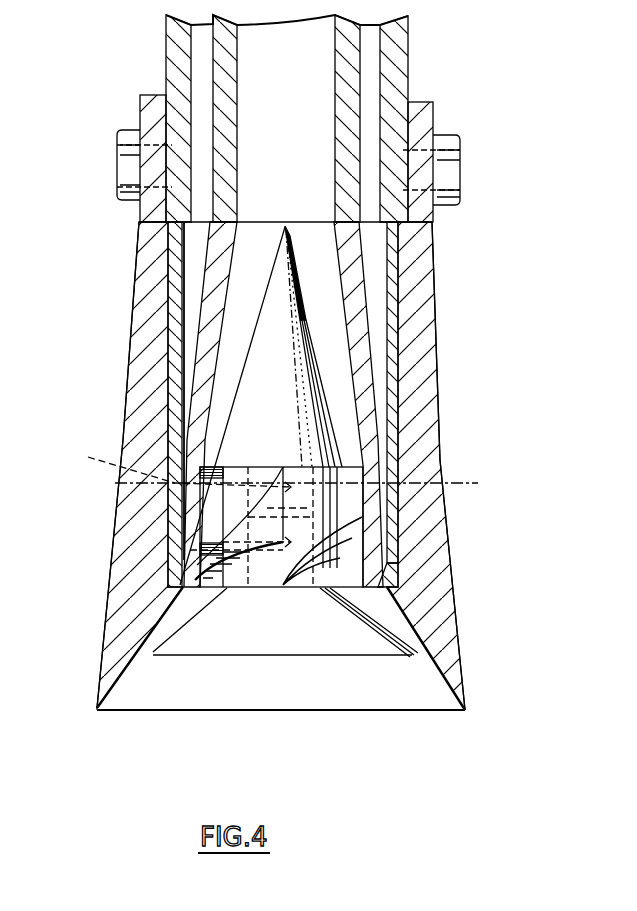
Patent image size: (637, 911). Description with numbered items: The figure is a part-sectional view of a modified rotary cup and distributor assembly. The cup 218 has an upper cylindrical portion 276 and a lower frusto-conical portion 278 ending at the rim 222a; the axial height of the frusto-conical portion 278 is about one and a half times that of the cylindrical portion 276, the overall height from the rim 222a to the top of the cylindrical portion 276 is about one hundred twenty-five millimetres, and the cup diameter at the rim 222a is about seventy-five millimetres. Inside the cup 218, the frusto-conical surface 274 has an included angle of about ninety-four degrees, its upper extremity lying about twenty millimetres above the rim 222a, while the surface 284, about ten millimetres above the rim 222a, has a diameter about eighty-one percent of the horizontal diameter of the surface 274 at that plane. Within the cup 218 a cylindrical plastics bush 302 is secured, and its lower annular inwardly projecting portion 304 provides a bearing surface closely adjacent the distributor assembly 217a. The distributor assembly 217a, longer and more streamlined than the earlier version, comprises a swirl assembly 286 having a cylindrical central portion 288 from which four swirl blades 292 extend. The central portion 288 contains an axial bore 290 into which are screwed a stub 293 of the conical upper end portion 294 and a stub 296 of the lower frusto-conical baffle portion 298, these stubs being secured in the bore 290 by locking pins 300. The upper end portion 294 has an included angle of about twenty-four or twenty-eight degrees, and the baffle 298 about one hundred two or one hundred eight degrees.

The distributor assembly 217a is at (212, 672).
The cup 218 is at (430, 423).
The rim 222a is at (465, 712).
The surface 274 is at (433, 713).
The cylindrical portion 276 is at (430, 132).
The frusto-conical portion 278 is at (425, 385).
The surface 284 is at (162, 656).
The swirl assembly 286 is at (302, 397).
The cylindrical central portion 288 is at (273, 568).
The axial bore 290 is at (440, 483).
The swirl blades 292 is at (213, 498).
The stub 293 is at (260, 467).
The conical upper end portion 294 is at (285, 277).
The stub 296 is at (300, 533).
The frusto-conical baffle portion 298 is at (372, 643).
The locking pins 300 is at (200, 545).
The cylindrical plastics bush 302 is at (390, 302).
The lower annular inwardly projecting portion 304 is at (387, 577).